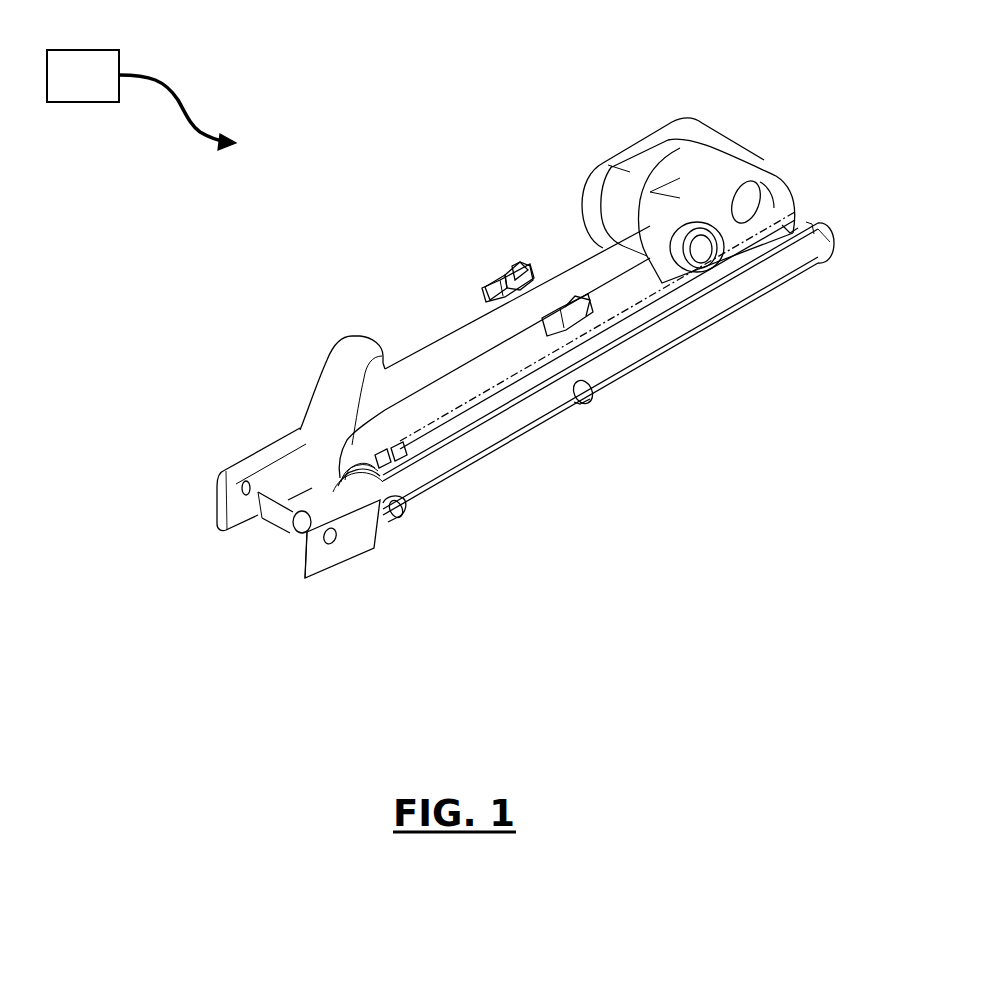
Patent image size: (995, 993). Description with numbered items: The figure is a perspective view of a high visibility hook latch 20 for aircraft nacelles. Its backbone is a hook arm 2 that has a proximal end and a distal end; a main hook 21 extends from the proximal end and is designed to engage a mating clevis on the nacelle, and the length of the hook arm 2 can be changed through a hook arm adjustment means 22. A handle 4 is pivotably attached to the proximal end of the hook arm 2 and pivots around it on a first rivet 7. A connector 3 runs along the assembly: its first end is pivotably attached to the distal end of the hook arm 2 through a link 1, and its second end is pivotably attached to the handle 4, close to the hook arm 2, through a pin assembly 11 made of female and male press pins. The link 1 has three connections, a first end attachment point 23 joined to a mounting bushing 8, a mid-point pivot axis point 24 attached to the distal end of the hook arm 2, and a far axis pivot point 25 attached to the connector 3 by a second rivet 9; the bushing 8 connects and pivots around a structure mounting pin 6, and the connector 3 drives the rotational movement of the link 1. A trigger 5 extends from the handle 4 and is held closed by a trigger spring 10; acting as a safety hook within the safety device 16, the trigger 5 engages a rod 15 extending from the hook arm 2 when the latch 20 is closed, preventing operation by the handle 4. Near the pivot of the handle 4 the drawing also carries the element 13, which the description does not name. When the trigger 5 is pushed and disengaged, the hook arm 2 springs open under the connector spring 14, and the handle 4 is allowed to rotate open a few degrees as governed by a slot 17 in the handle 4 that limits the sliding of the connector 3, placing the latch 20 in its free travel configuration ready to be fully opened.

The link 1 is at (661, 148).
The hook arm 2 is at (298, 475).
The connector 3 is at (733, 257).
The handle 4 is at (262, 470).
The trigger 5 is at (516, 262).
The structure mounting pin 6 is at (773, 197).
The first rivet 7 is at (587, 390).
The mounting bushing 8 is at (710, 236).
The second rivet 9 is at (807, 227).
The trigger spring 10 is at (497, 413).
The pin assembly 11 is at (400, 514).
The spring 13 is at (343, 496).
The connector spring 14 is at (360, 477).
The rod 15 is at (484, 290).
The safety device 16 is at (490, 264).
The slot 17 is at (405, 505).
The high visibility hook latch 20 is at (141, 100).
The main hook 21 is at (335, 350).
The hook arm adjustment means 22 is at (337, 498).
The first end attachment point 23 is at (606, 190).
The mid-point pivot axis point 24 is at (757, 180).
The far axis pivot point 25 is at (790, 229).